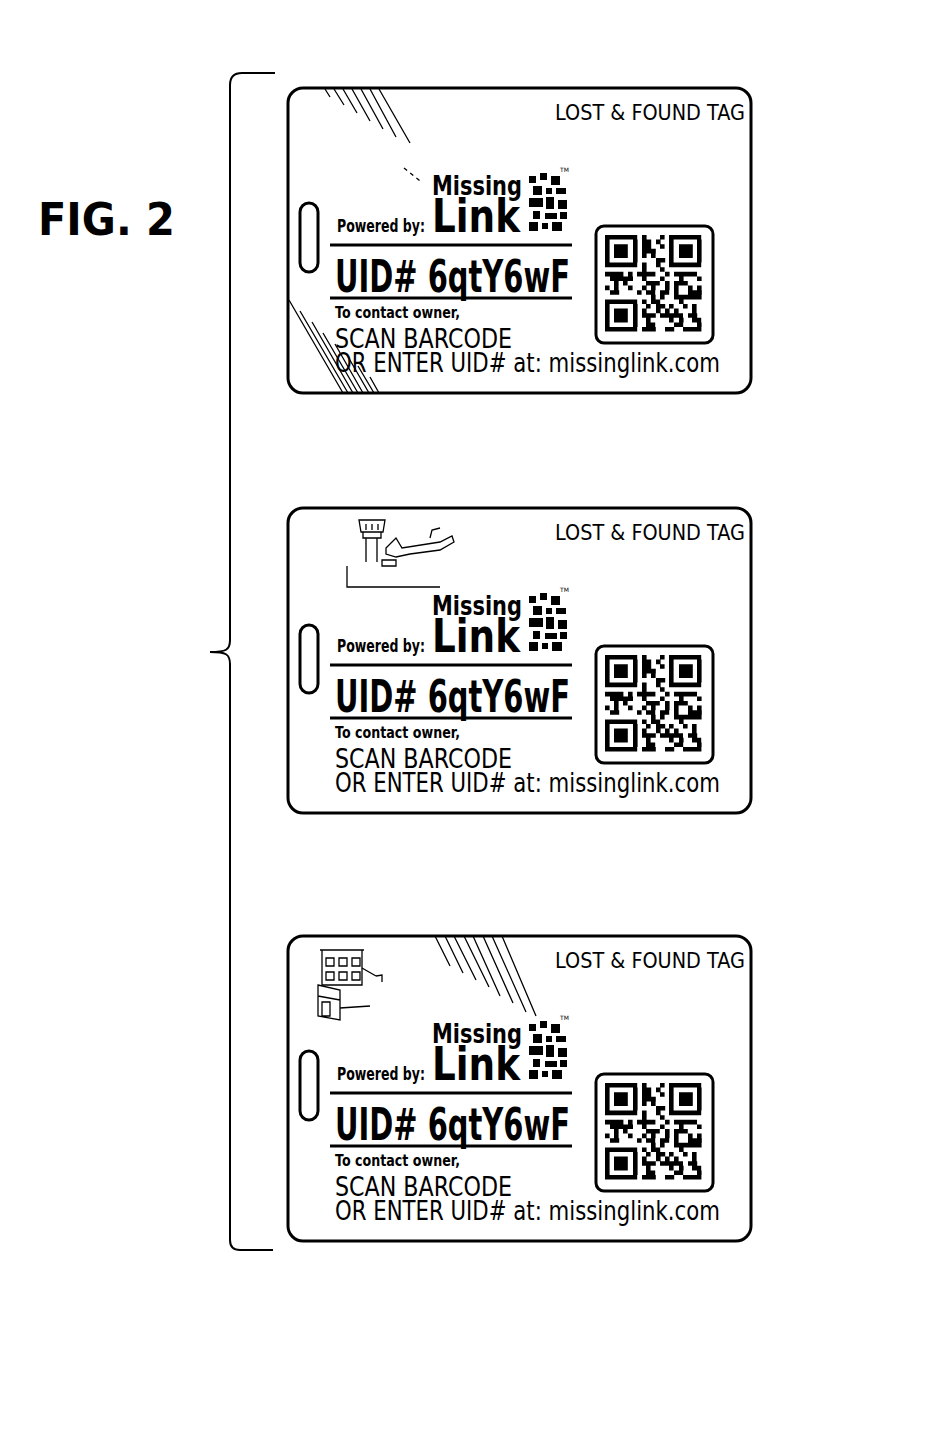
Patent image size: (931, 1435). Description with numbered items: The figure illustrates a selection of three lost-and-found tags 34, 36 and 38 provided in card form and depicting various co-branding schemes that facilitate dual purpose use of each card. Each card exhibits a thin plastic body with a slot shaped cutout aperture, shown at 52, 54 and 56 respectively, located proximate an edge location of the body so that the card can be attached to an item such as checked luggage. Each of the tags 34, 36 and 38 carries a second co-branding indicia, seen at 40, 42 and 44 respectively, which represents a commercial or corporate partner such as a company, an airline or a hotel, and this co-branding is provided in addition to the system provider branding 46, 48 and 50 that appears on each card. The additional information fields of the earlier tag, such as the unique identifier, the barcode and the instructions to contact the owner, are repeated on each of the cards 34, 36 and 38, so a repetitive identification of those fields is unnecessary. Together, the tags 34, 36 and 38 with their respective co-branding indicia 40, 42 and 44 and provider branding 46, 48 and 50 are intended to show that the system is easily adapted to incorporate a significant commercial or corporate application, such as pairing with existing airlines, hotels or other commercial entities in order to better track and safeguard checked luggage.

The tag 34 is at (538, 223).
The tag 36 is at (538, 630).
The tag 38 is at (538, 1054).
The second co-branding indicia 40 is at (342, 150).
The second co-branding indicia 42 is at (391, 517).
The second co-branding indicia 44 is at (377, 944).
The system provider branding 46 is at (428, 182).
The system provider branding 48 is at (500, 567).
The system provider branding 50 is at (500, 996).
The slot shaped cutout aperture 52 is at (306, 232).
The slot shaped cutout aperture 54 is at (276, 659).
The slot shaped cutout aperture 56 is at (276, 1085).